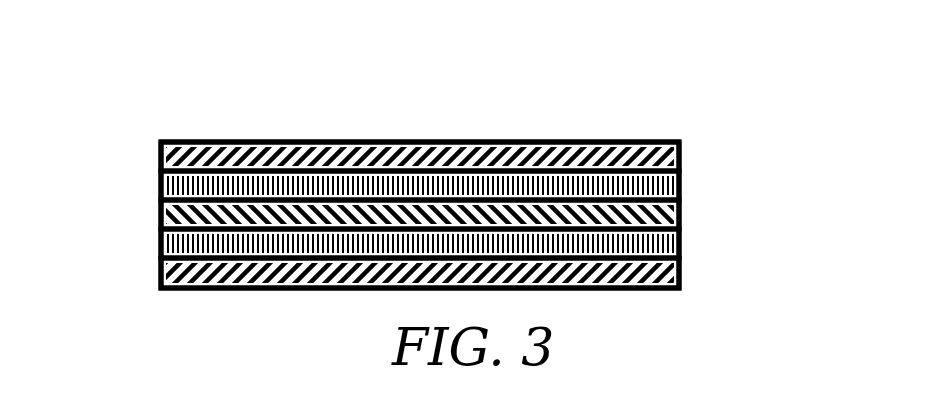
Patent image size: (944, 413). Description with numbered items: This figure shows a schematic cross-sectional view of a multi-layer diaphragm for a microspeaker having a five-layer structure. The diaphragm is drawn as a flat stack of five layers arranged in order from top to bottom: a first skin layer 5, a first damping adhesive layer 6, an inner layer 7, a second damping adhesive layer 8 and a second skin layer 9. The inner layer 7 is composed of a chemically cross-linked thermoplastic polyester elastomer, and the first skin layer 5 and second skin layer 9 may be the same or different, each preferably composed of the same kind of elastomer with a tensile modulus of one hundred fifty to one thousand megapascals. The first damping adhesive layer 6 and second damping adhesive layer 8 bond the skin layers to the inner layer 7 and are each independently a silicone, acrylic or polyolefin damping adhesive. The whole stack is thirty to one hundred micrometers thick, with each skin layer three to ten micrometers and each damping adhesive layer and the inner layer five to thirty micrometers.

The first skin layer 5 is at (702, 155).
The first damping adhesive layer 6 is at (702, 188).
The inner layer 7 is at (702, 217).
The second damping adhesive layer 8 is at (702, 251).
The second skin layer 9 is at (702, 288).